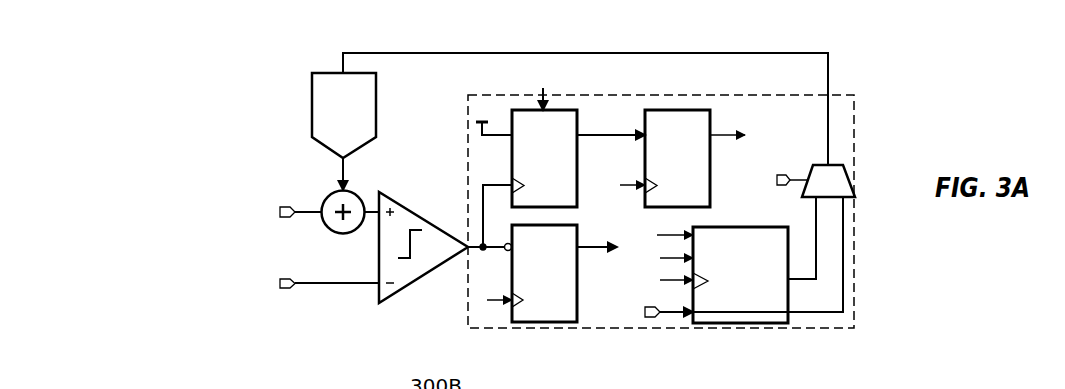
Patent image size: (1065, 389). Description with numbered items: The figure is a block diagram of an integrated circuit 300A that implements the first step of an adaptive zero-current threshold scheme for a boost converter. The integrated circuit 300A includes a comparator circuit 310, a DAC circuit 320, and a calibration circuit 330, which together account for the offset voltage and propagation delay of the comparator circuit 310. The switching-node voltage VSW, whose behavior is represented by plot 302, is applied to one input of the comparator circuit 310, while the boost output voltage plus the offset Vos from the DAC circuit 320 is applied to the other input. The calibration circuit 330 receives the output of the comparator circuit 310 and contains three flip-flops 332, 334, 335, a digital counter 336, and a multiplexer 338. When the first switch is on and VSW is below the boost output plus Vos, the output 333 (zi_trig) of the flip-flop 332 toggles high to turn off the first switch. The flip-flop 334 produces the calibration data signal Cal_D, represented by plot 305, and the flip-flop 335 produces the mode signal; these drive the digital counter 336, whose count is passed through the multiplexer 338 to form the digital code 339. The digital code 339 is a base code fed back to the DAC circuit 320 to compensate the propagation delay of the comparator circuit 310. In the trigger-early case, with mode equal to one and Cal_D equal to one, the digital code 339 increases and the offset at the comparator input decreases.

The integrated circuit 300A is at (228, 97).
The zero-current compensation (zeroI Comp) signal 302 is at (320, 283).
The calibration data (Cal_D) 305 is at (597, 250).
The comparator circuit 310 is at (418, 198).
The DAC circuit 320 is at (387, 75).
The calibration circuit 330 is at (603, 88).
The flip-flop 332 is at (544, 143).
The output (zi_trig) of the flip-flop 333 is at (611, 139).
The flip-flop 334 is at (519, 273).
The flip-flop 335 is at (666, 158).
The digital counter 336 is at (705, 271).
The multiplexer 338 is at (852, 157).
The digital code 339 is at (714, 83).